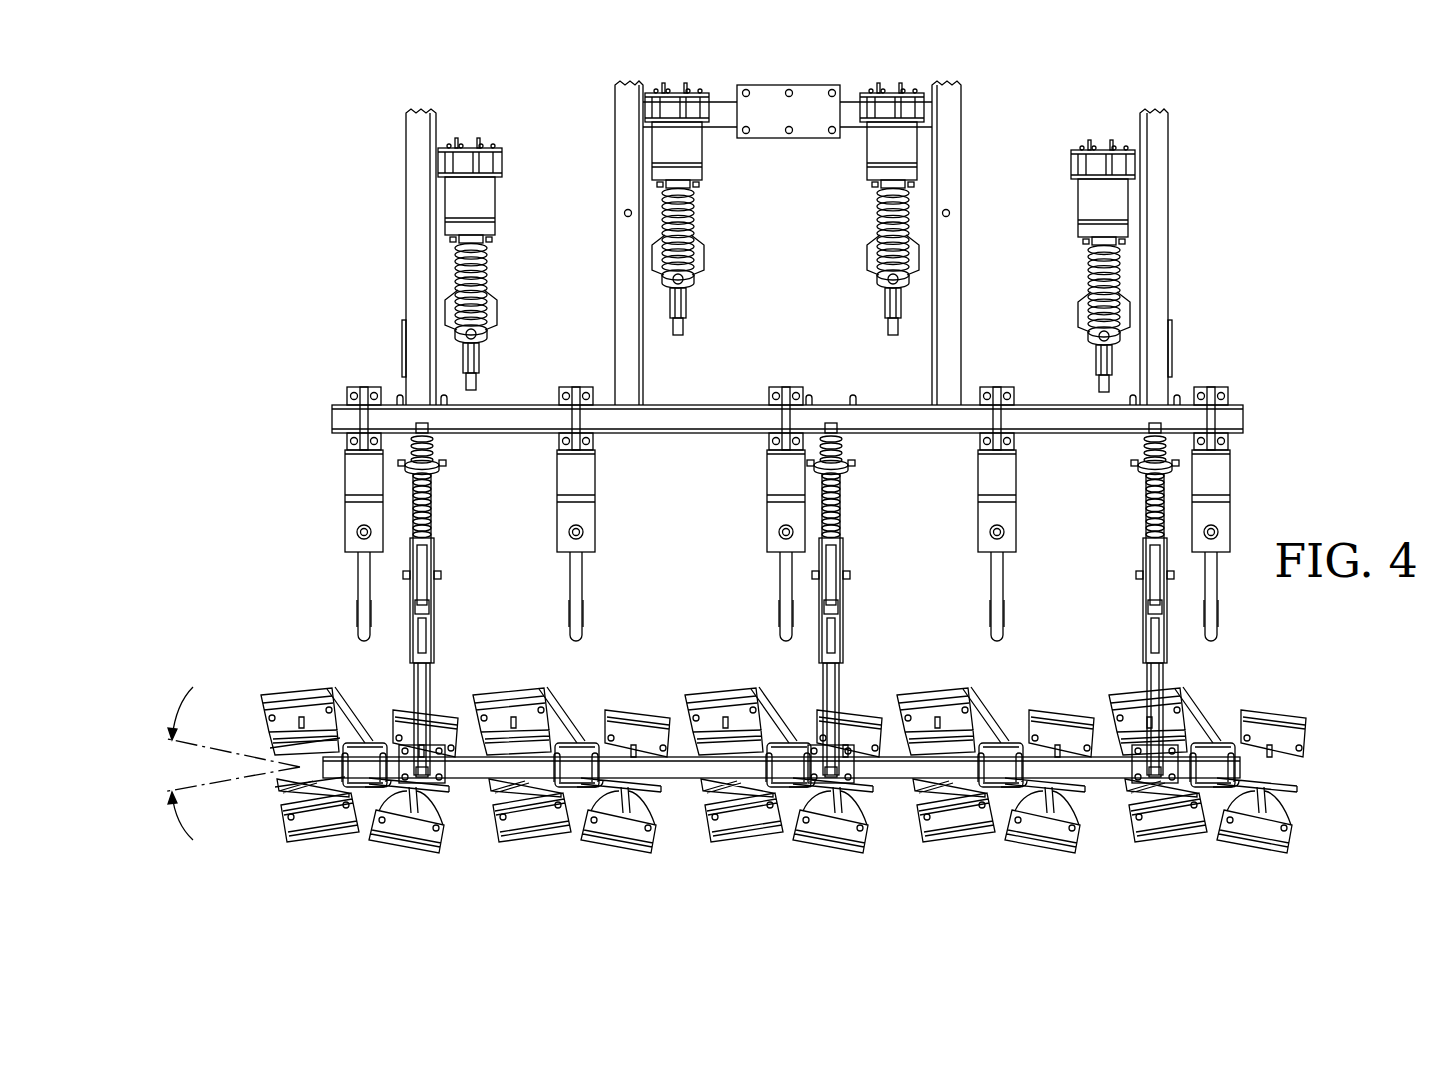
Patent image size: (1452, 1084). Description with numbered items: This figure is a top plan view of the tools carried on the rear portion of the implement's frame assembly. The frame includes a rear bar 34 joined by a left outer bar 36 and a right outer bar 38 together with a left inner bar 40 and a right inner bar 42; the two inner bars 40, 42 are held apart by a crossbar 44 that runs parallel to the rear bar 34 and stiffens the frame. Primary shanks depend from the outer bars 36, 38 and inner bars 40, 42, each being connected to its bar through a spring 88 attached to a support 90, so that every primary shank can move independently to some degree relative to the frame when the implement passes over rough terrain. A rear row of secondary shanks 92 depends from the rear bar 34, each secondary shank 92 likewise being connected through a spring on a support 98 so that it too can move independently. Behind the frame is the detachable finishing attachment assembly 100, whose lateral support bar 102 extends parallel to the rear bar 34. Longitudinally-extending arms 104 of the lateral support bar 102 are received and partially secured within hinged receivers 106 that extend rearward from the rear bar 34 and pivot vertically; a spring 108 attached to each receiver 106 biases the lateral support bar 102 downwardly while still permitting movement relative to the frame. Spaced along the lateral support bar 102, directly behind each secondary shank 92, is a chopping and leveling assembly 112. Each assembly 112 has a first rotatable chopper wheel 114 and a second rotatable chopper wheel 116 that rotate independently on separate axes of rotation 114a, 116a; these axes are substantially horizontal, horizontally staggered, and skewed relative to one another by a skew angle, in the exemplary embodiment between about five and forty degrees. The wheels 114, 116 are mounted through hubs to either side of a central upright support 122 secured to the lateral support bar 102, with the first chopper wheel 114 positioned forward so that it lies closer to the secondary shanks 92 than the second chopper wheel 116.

The rear bar 34 is at (1238, 418).
The left outer bar 36 is at (415, 191).
The right outer bar 38 is at (1157, 190).
The left inner bar 40 is at (628, 163).
The right inner bar 42 is at (948, 160).
The crossbar 44 is at (925, 128).
The spring 88 is at (787, 291).
The support 90 is at (786, 164).
The secondary shank 92 is at (788, 596).
The support 98 is at (788, 469).
The finishing attachment assembly 100 is at (742, 766).
The lateral support bar 102 is at (1242, 765).
The longitudinally-extending arm 104 is at (788, 710).
The hinged receiver 106 is at (788, 600).
The spring 108 is at (788, 484).
The chopping and leveling assembly 112 is at (784, 778).
The first rotatable chopper wheel 114 is at (734, 784).
The axis of rotation 114a is at (255, 775).
The second rotatable chopper wheel 116 is at (838, 798).
The axis of rotation 116a is at (255, 752).
The central upright support 122 is at (785, 717).